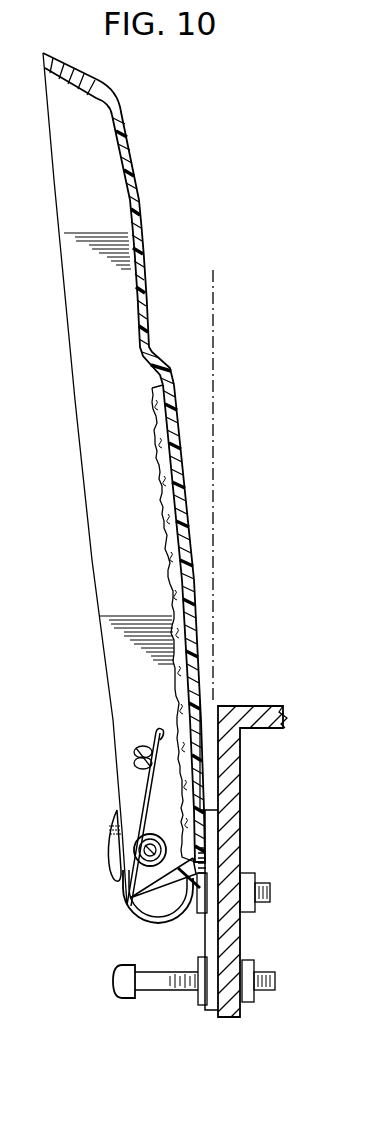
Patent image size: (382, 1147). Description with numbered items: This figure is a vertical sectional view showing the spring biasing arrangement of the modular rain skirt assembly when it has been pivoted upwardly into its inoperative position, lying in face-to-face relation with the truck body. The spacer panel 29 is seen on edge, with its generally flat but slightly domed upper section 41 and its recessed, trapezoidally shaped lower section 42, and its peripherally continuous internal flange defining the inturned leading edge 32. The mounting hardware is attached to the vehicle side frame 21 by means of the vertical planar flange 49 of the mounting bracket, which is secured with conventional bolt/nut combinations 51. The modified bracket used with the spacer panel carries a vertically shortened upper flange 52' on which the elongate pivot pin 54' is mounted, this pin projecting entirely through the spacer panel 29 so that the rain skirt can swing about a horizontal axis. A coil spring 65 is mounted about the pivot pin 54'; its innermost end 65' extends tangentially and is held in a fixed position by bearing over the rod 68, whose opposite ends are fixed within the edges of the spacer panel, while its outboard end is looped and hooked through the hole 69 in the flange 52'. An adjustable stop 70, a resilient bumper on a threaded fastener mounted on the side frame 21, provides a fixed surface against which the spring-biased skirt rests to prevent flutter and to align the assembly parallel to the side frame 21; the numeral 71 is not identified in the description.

The side frame 21 is at (228, 778).
The spacer panel 29 is at (183, 497).
The inturned leading edge 32 is at (95, 560).
The upper section 41 is at (192, 576).
The lower section 42 is at (140, 226).
The vertical planar flange 49 is at (212, 930).
The bolt/nut combination 51 is at (256, 882).
The vertically shortened upper flange 52' is at (82, 843).
The elongate pivot pin 54' is at (104, 853).
The coil spring 65 is at (118, 896).
The innermost end of coil spring 65' is at (103, 817).
The rod 68 is at (134, 757).
The hole 69 is at (200, 870).
The adjustable stop 70 is at (112, 981).
The panel surface 71 is at (172, 612).